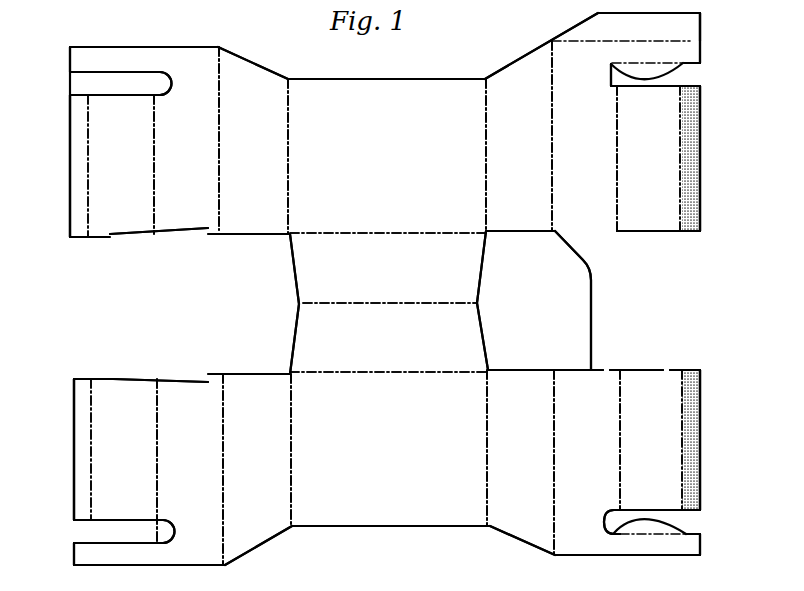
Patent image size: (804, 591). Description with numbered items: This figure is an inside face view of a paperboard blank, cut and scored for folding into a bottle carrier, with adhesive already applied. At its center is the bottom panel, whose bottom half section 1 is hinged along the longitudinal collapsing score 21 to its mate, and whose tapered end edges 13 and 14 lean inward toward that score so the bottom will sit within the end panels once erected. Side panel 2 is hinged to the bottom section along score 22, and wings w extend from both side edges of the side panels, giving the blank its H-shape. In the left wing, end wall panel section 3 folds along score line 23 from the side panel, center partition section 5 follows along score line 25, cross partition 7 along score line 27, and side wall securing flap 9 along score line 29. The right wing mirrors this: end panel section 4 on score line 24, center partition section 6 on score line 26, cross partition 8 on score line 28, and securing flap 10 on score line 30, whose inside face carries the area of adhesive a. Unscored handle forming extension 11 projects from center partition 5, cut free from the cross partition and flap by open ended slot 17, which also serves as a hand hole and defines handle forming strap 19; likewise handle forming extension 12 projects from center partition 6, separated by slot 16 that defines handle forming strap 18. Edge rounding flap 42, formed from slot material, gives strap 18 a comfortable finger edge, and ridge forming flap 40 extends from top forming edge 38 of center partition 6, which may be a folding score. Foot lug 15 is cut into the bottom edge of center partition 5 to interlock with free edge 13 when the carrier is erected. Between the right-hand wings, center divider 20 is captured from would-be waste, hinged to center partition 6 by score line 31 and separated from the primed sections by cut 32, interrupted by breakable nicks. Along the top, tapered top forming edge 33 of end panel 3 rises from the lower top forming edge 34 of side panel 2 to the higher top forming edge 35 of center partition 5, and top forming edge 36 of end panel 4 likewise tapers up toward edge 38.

The bottom half section 1 is at (394, 276).
The side panel 2 is at (394, 164).
The end wall panel section 3 is at (259, 161).
The end panel section 4 is at (521, 164).
The end cell center partition section 5 is at (192, 159).
The end cell center partition section 6 is at (587, 164).
The cross partition 7 is at (124, 159).
The cross partition 8 is at (653, 164).
The side wall securing flap 9 is at (78, 184).
The side panel securing flap 10 is at (695, 190).
The handle forming extension 11 is at (118, 58).
The handle forming extension 12 is at (690, 48).
The end edge 13 is at (292, 268).
The end edge 14 is at (482, 276).
The foot lug 15 is at (205, 230).
The open ended slot 16 is at (690, 80).
The open ended slot 17 is at (100, 82).
The handle forming strap 18 is at (663, 50).
The handle forming strap 19 is at (82, 56).
The center divider 20 is at (651, 306).
The collapsing score 21 is at (353, 301).
The score 22 is at (450, 231).
The score line 23 is at (290, 149).
The score line 24 is at (485, 178).
The score line 25 is at (221, 170).
The score line 26 is at (552, 176).
The score line 27 is at (156, 168).
The score line 28 is at (617, 194).
The score line 29 is at (90, 201).
The score line 30 is at (681, 196).
The score line 31 is at (589, 237).
The cut 32 is at (641, 368).
The top forming edge 33 is at (257, 60).
The top forming edge 34 is at (378, 78).
The top forming edge 35 is at (193, 46).
The top forming edge 36 is at (527, 52).
The top forming edge 38 is at (578, 42).
The ridge forming flap 40 is at (635, 25).
The edge rounding flap 42 is at (645, 76).
The area of adhesive a is at (695, 133).
The wing w is at (68, 155).